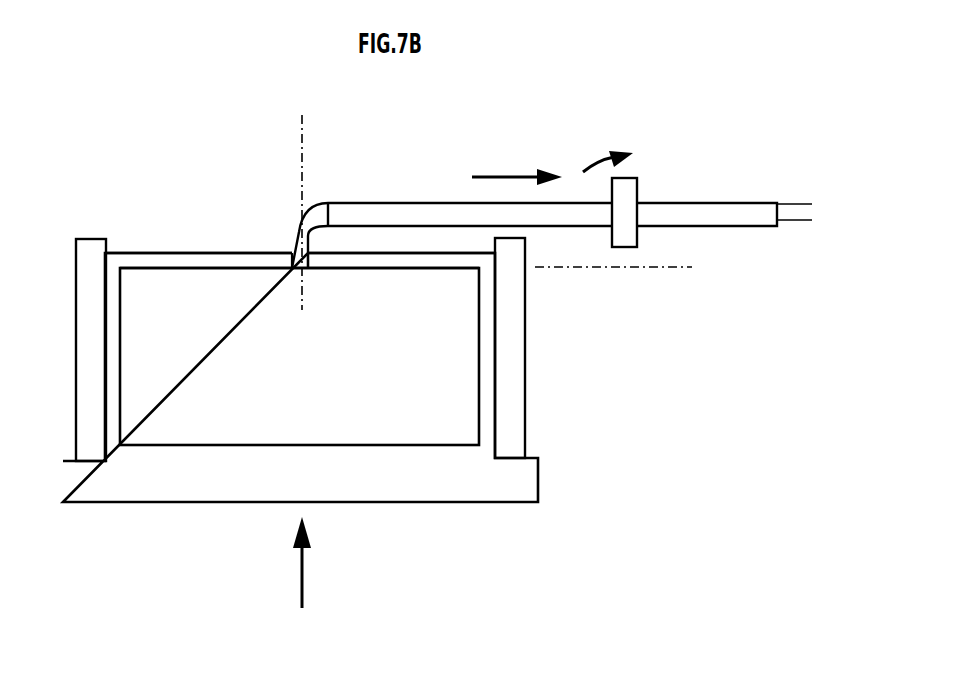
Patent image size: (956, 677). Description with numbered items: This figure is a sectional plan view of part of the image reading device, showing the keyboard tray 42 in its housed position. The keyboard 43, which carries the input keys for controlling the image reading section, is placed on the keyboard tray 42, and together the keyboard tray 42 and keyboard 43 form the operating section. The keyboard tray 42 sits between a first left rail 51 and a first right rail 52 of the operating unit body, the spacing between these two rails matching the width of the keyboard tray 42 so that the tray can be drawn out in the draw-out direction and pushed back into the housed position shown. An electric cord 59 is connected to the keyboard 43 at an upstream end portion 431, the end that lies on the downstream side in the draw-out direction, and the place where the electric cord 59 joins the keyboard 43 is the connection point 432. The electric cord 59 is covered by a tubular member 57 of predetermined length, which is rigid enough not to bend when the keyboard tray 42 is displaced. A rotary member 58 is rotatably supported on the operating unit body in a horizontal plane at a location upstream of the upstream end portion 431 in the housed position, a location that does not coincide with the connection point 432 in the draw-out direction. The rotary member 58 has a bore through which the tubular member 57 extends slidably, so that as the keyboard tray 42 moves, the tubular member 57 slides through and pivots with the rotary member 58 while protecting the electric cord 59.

The keyboard tray 42 is at (150, 480).
The keyboard 43 is at (243, 412).
The upstream end portion of the keyboard 431 is at (177, 268).
The connection point 432 is at (292, 253).
The first left rail 51 is at (87, 353).
The first right rail 52 is at (515, 363).
The tubular member 57 is at (412, 213).
The rotary member 58 is at (627, 188).
The electric cord 59 is at (315, 210).